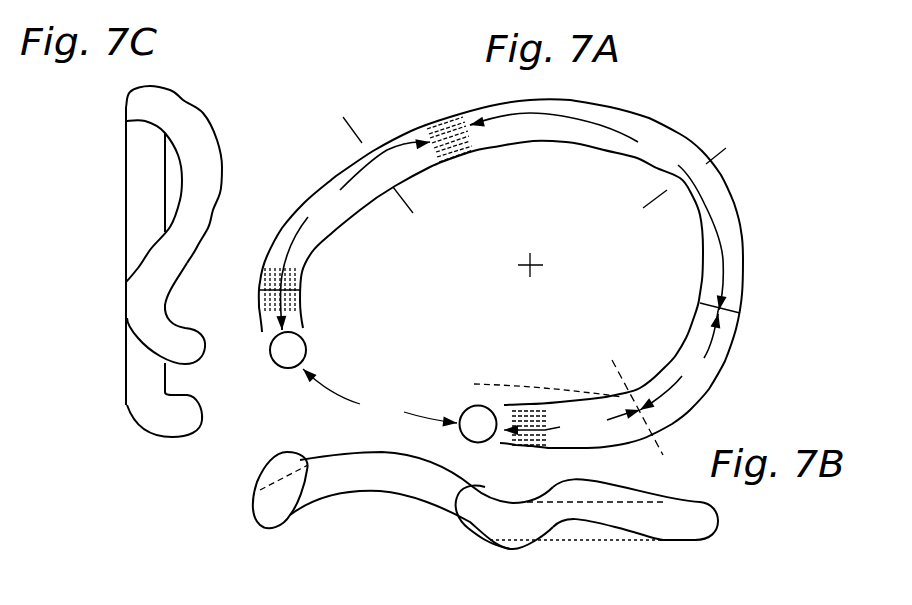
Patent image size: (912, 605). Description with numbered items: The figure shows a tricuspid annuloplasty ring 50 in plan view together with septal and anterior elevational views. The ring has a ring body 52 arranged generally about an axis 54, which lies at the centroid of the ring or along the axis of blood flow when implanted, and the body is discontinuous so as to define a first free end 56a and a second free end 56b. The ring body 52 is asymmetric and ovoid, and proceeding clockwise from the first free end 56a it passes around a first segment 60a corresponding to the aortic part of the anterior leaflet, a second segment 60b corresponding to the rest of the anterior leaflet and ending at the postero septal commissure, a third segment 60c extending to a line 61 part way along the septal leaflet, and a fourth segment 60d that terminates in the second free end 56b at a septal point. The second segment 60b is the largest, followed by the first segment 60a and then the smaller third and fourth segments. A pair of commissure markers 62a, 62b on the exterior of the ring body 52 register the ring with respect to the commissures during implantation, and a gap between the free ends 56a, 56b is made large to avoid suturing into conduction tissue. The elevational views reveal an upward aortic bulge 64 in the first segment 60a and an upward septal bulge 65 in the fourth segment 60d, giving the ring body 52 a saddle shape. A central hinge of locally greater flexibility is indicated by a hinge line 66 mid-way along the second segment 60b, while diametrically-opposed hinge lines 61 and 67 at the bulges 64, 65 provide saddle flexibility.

In FIG. 7A, the tricuspid ring 50 is at (524, 260).
In FIG. 7A, the ring body 52 is at (727, 192).
In FIG. 7A, the axis 54 is at (546, 262).
In FIG. 7A, the first free end 56a is at (306, 350).
In FIG. 7A, the second free end 56b is at (471, 406).
In FIG. 7A, the first segment 60a is at (355, 236).
In FIG. 7A, the second segment 60b is at (596, 212).
In FIG. 7A, the third segment 60c is at (679, 360).
In FIG. 7A, the fourth segment 60d is at (577, 424).
In FIG. 7A, the hinge line 61 is at (625, 366).
In FIG. 7C, the commissure marker 62a is at (126, 317).
In FIG. 7A, the commissure marker 62a is at (258, 313).
In FIG. 7A, the commissure marker 62b is at (742, 298).
In FIG. 7C, the aortic bulge 64 is at (143, 259).
In FIG. 7B, the aortic bulge 64 is at (485, 523).
In FIG. 7B, the septal bulge 65 is at (597, 521).
In FIG. 7A, the hinge line 66 is at (727, 148).
In FIG. 7A, the hinge line 67 is at (354, 126).